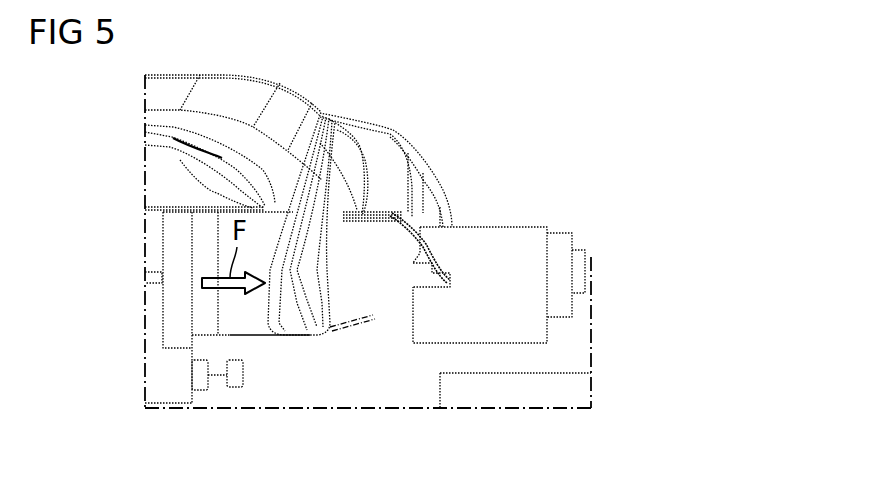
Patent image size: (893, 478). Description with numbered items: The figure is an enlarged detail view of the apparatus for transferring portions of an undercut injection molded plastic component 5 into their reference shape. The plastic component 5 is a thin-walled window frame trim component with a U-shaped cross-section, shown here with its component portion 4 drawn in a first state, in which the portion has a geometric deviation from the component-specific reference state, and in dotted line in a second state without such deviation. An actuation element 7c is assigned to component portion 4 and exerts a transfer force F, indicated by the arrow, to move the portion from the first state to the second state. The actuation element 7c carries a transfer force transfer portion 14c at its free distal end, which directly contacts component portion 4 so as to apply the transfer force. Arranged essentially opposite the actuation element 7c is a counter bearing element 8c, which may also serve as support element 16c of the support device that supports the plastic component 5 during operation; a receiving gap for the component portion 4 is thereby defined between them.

The undercut injection molded plastic component 5 is at (245, 93).
The component portion 4 is at (280, 280).
The transfer force transfer portion 14c is at (268, 303).
The actuation element 7c is at (258, 317).
The counter bearing element 8c is at (502, 289).
The support element 16c is at (495, 247).